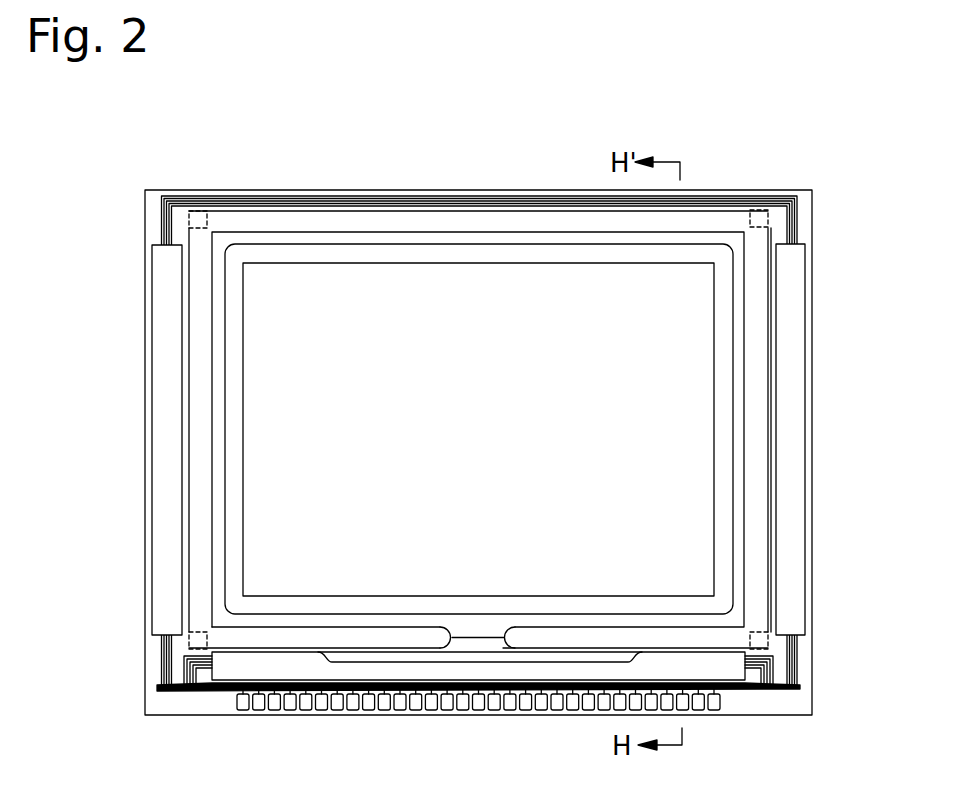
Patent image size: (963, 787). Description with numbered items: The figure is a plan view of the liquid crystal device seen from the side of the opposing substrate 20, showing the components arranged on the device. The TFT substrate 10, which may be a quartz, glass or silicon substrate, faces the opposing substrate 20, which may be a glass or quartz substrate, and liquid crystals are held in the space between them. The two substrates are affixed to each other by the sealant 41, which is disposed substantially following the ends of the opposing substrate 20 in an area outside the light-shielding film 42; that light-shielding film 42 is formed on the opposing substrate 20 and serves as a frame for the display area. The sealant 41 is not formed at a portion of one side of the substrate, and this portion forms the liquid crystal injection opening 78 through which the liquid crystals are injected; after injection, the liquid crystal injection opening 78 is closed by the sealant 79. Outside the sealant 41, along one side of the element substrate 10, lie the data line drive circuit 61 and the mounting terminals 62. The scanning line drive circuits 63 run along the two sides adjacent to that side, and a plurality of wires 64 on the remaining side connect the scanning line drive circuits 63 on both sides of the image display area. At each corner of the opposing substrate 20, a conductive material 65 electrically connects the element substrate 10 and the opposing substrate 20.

The TFT substrate 10 is at (272, 190).
The opposing substrate 20 is at (378, 210).
The sealant 41 is at (769, 352).
The light-shielding film 42 is at (243, 360).
The data line drive circuit 61 is at (228, 668).
The mounting terminals 62 is at (404, 706).
The scanning line drive circuits 63 is at (152, 505).
The wires 64 is at (495, 193).
The conductive material 65 is at (188, 218).
The liquid crystal injection opening 78 is at (482, 639).
The sealant 79 is at (527, 656).